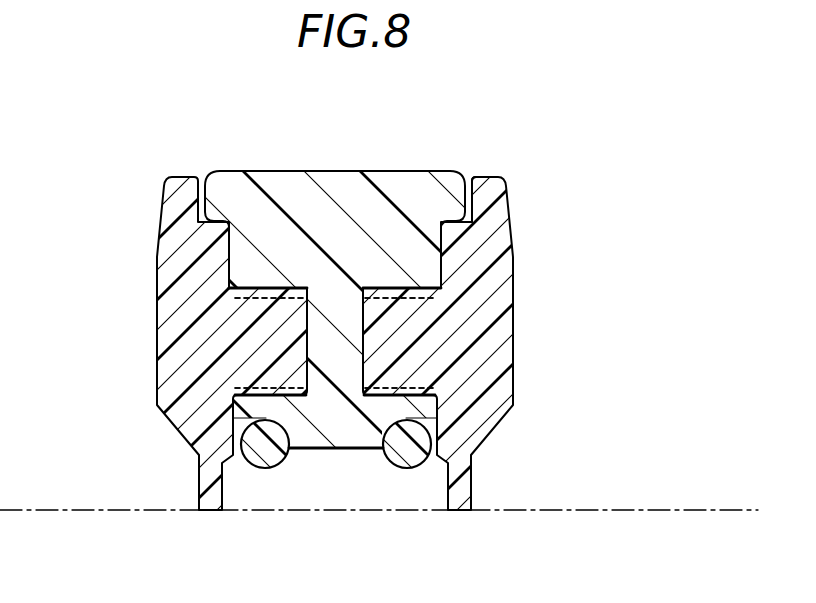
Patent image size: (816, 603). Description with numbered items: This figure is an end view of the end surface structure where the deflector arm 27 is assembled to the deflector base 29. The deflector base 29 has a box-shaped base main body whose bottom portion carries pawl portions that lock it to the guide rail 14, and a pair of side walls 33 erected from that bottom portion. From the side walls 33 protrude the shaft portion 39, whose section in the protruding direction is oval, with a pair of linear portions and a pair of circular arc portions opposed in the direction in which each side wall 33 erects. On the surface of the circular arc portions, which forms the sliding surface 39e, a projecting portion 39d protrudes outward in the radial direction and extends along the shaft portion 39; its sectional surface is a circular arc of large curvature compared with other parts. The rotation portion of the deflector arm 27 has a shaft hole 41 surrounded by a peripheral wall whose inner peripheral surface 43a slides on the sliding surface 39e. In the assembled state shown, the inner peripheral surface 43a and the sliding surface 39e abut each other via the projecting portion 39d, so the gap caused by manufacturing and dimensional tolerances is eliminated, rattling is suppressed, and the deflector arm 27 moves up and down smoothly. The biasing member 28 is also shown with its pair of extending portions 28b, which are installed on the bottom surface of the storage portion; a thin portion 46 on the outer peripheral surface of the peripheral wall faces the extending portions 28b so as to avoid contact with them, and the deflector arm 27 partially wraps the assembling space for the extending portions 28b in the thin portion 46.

The guide rail 14 is at (626, 510).
The deflector arm 27 is at (343, 173).
The biasing member 28 is at (336, 504).
The extending portions 28b is at (408, 468).
The deflector base 29 is at (485, 178).
The side walls 33 is at (158, 312).
The shaft portion 39 is at (280, 377).
The projecting portion 39d is at (232, 328).
The sliding surface 39e is at (236, 290).
The shaft hole 41 is at (354, 310).
The inner peripheral surface 43a is at (405, 290).
The thin portion 46 is at (241, 437).